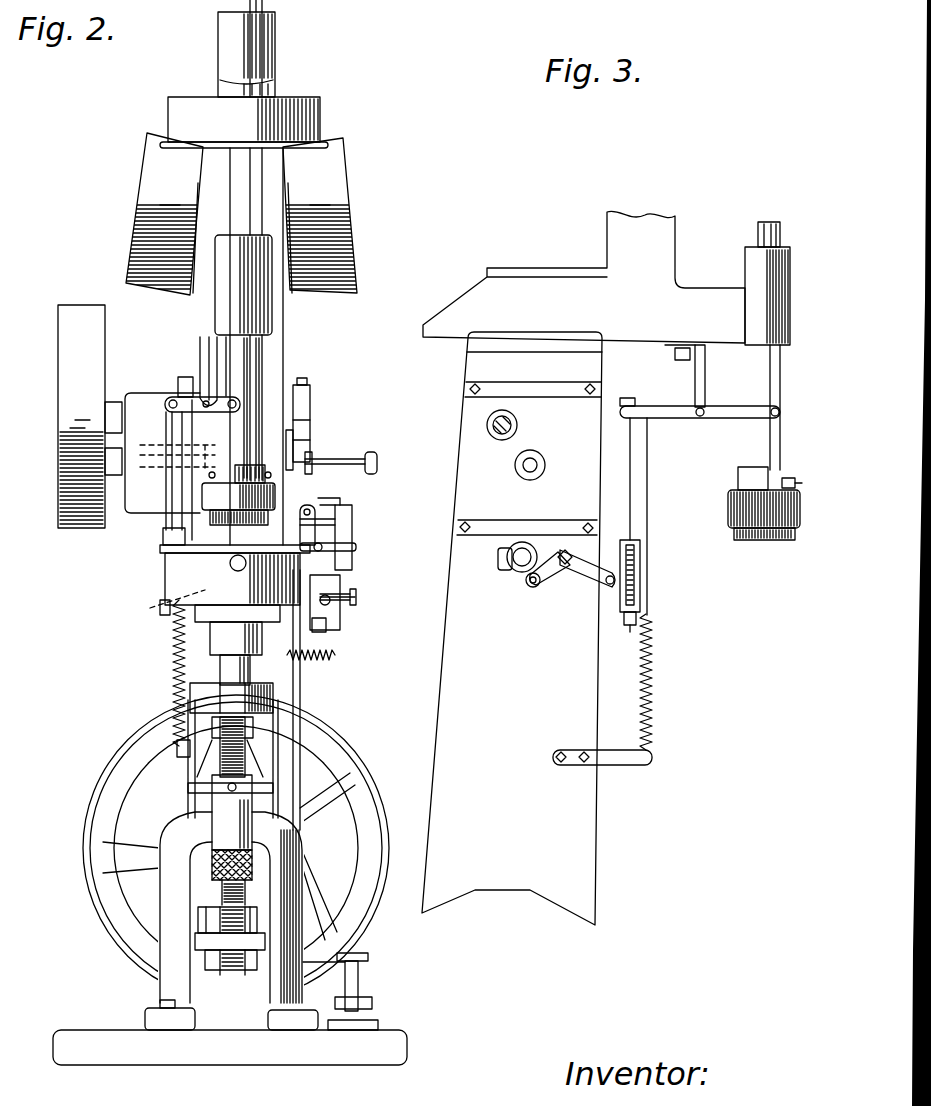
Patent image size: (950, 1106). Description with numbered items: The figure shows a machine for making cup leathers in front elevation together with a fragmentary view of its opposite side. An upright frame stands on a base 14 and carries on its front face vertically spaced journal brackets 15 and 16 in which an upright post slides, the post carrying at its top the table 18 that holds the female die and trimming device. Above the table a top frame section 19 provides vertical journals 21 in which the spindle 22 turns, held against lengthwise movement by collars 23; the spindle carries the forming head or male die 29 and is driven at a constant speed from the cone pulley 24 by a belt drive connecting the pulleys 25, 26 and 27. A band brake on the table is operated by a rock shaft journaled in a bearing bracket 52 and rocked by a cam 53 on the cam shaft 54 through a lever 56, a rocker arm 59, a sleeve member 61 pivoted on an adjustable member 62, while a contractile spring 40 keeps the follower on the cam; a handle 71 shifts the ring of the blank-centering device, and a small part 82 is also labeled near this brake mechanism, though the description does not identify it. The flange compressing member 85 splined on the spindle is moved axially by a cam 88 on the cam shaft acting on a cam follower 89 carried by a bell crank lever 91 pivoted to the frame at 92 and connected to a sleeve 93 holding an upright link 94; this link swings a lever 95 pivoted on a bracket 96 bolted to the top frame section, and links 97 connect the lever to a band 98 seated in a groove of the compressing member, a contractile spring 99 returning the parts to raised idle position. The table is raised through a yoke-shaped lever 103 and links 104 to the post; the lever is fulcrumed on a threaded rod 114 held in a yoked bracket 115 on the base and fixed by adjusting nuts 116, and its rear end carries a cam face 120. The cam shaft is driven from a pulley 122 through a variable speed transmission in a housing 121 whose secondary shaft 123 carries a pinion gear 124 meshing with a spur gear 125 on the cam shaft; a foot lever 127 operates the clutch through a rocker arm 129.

In FIG. 2, the base 14 is at (94, 1036).
In FIG. 2, the journal bracket 15 is at (258, 725).
In FIG. 2, the journal bracket 16 is at (250, 917).
In FIG. 2, the table 18 is at (192, 577).
In FIG. 2, the top frame section 19 is at (283, 306).
In FIG. 3, the top frame section 19 is at (584, 277).
In FIG. 2, the vertical journals 21 is at (262, 62).
In FIG. 2, the spindle 22 is at (245, 352).
In FIG. 2, the collars 23 is at (275, 93).
In FIG. 2, the cone pulley 24 is at (347, 848).
In FIG. 2, the pulley 25 is at (345, 798).
In FIG. 2, the pulley 26 is at (147, 181).
In FIG. 2, the pulley 27 is at (315, 113).
In FIG. 3, the forming head 29 is at (760, 530).
In FIG. 2, the contractile spring 40 is at (328, 657).
In FIG. 2, the bearing bracket 52 is at (344, 578).
In FIG. 2, the cam 53 is at (342, 528).
In FIG. 2, the cam shaft 54 is at (357, 548).
In FIG. 3, the cam shaft 54 is at (507, 558).
In FIG. 2, the lever 56 is at (347, 520).
In FIG. 2, the rocker arm 59 is at (340, 631).
In FIG. 2, the sleeve member 61 is at (357, 597).
In FIG. 2, the member 62 is at (312, 621).
In FIG. 2, the handle 71 is at (160, 548).
In FIG. 2, the bracket 82 is at (308, 522).
In FIG. 3, the flange compressing member 85 is at (740, 511).
In FIG. 3, the cam 88 is at (508, 572).
In FIG. 3, the cam follower 89 is at (533, 588).
In FIG. 3, the bell crank lever 91 is at (565, 573).
In FIG. 3, the pivot 92 is at (565, 548).
In FIG. 3, the sleeve 93 is at (640, 562).
In FIG. 2, the upright link 94 is at (166, 518).
In FIG. 3, the upright link 94 is at (633, 508).
In FIG. 2, the lever 95 is at (196, 400).
In FIG. 3, the lever 95 is at (686, 418).
In FIG. 2, the bracket 96 is at (204, 345).
In FIG. 3, the bracket 96 is at (700, 376).
In FIG. 3, the links 97 is at (752, 445).
In FIG. 3, the band 98 is at (742, 484).
In FIG. 3, the contractile spring 99 is at (655, 692).
In FIG. 2, the lever 103 is at (207, 690).
In FIG. 2, the links 104 is at (193, 755).
In FIG. 2, the threaded rod 114 is at (225, 730).
In FIG. 2, the yoked bracket 115 is at (165, 948).
In FIG. 2, the adjusting nuts 116 is at (213, 863).
In FIG. 2, the cam face 120 is at (372, 460).
In FIG. 2, the housing 121 is at (134, 394).
In FIG. 3, the housing 121 is at (505, 465).
In FIG. 2, the pulley 122 is at (70, 308).
In FIG. 2, the secondary shaft 123 is at (156, 468).
In FIG. 3, the secondary shaft 123 is at (565, 447).
In FIG. 2, the pinion gear 124 is at (155, 448).
In FIG. 2, the spur gear 125 is at (151, 605).
In FIG. 2, the foot lever 127 is at (362, 958).
In FIG. 2, the rocker arm 129 is at (312, 422).